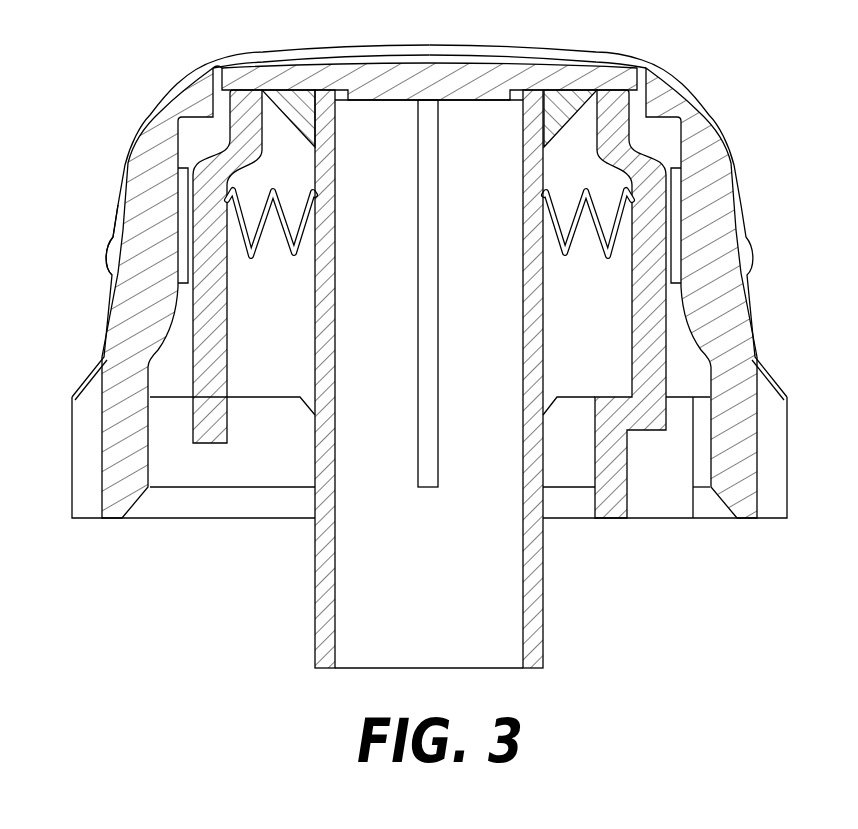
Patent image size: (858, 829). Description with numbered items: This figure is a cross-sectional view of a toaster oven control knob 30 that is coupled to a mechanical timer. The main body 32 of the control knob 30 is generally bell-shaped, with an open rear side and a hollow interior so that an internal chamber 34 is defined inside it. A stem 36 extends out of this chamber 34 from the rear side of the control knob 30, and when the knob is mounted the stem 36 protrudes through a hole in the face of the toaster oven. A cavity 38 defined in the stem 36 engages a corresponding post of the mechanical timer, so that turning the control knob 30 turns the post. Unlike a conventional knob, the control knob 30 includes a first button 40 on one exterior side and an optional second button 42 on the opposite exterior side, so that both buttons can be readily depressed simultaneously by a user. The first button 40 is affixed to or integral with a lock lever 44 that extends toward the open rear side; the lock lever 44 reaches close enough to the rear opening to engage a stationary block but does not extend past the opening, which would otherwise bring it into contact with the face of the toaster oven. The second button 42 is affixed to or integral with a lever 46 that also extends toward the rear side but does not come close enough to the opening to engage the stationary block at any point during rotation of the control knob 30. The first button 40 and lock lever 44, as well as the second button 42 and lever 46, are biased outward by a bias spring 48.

The control knob 30 is at (670, 88).
The main body 32 is at (110, 505).
The internal chamber 34 is at (225, 470).
The stem 36 is at (538, 628).
The cavity 38 is at (480, 563).
The first button 40 is at (752, 240).
The second button 42 is at (110, 237).
The lock lever 44 is at (652, 167).
The lever 46 is at (215, 162).
The bias spring 48 is at (297, 250).